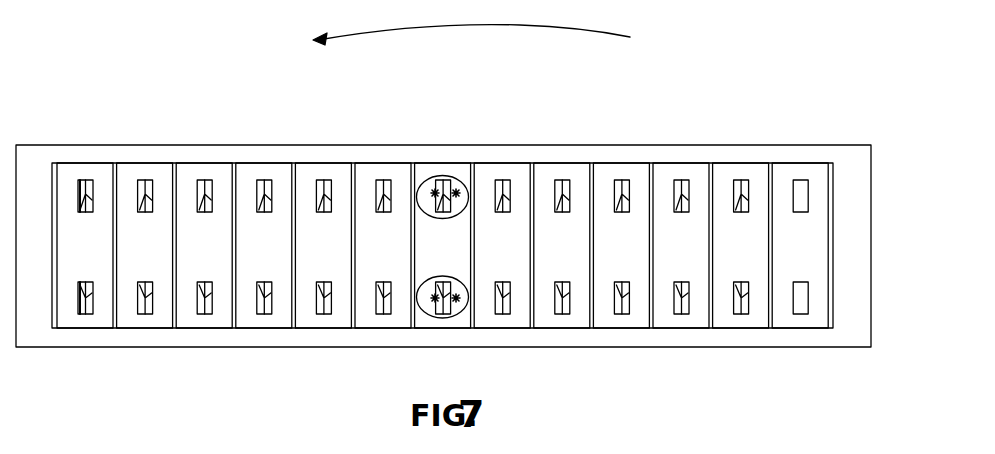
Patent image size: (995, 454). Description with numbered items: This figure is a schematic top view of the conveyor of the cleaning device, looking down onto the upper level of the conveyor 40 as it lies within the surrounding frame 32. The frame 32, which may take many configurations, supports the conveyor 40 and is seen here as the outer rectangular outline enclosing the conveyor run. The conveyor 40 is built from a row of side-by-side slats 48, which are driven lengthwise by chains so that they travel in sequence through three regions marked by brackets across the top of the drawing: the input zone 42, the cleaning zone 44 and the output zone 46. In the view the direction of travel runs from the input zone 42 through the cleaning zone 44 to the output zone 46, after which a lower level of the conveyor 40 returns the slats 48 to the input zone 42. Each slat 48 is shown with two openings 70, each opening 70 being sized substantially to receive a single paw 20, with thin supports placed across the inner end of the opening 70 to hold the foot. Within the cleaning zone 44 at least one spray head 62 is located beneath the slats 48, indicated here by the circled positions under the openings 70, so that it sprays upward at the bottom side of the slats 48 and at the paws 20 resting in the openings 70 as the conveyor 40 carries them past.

The paw 20 is at (748, 195).
The frame 32 is at (734, 346).
The conveyor 40 is at (641, 312).
The input zone 42 is at (732, 205).
The cleaning zone 44 is at (460, 204).
The output zone 46 is at (316, 110).
The slat 48 is at (803, 215).
The spray head 62 is at (450, 240).
The opening 70 is at (813, 157).